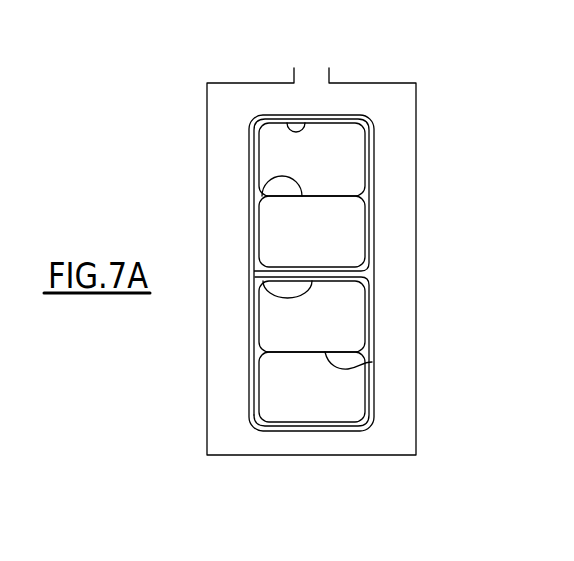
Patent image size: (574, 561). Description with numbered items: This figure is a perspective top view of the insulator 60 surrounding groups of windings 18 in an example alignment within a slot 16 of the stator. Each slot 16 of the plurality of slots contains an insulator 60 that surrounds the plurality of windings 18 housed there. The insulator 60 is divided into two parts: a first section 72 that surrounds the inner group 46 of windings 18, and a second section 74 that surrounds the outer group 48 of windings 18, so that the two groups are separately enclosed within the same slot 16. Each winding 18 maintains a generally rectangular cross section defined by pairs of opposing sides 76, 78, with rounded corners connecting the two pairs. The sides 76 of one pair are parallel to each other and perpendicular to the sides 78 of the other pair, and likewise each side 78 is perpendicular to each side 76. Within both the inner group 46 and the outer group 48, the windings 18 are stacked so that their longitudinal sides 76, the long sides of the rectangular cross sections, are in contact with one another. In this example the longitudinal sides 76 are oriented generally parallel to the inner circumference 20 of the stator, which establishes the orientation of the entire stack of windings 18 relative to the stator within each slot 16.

The slot 16 is at (395, 421).
The windings 18 is at (287, 157).
The inner circumference 20 is at (405, 76).
The inner group 46 is at (350, 167).
The outer group 48 is at (350, 318).
The insulator 60 is at (368, 277).
The first section 72 is at (357, 193).
The second section 74 is at (263, 423).
The longitudinal sides 76 is at (287, 123).
The opposing sides 78 is at (260, 139).